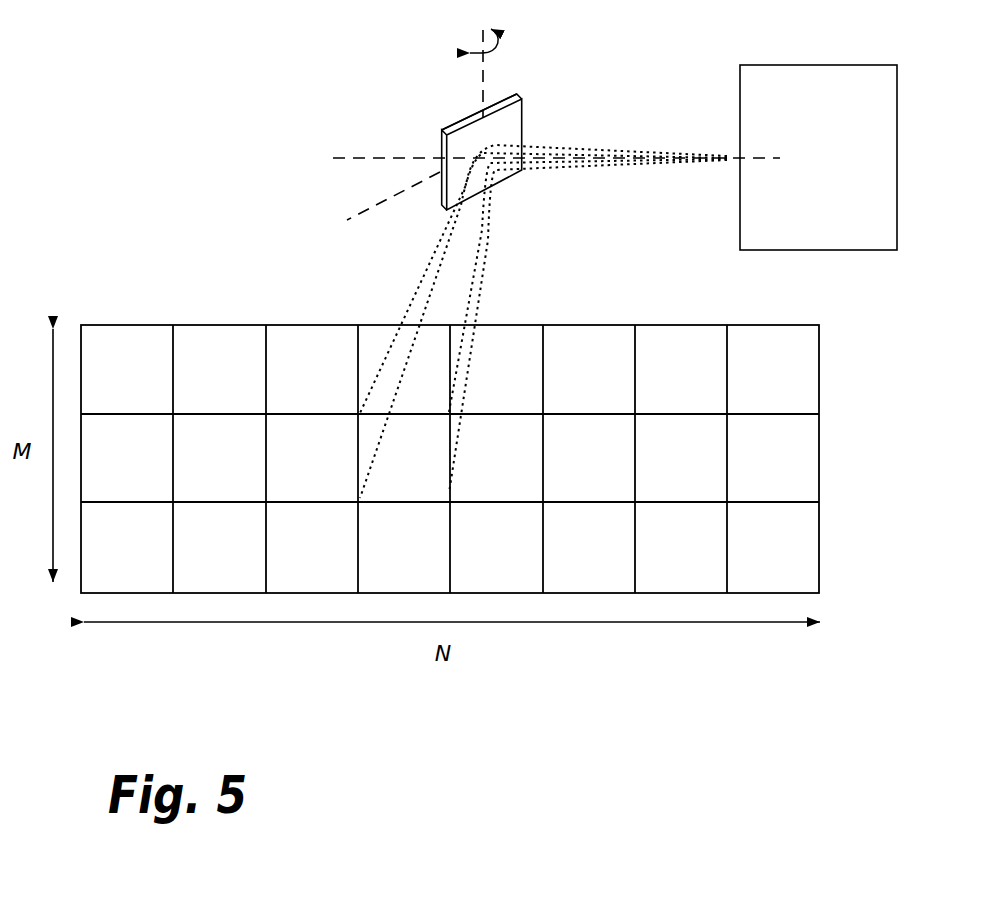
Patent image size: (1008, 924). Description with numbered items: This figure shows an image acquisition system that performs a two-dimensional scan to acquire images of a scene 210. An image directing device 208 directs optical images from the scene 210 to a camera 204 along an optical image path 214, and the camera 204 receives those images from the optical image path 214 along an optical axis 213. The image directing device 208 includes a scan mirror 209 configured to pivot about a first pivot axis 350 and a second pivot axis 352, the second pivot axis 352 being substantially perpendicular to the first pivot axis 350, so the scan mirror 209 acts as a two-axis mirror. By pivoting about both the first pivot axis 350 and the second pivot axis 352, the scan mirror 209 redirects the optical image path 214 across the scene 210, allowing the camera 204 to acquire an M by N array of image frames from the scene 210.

The camera 204 is at (833, 68).
The image directing device 208 is at (522, 210).
The scan mirror 209 is at (516, 93).
The scene 210 is at (252, 300).
The optical axis 213 is at (364, 157).
The optical image path 214 is at (652, 152).
The first pivot axis 350 is at (480, 90).
The second pivot axis 352 is at (363, 213).